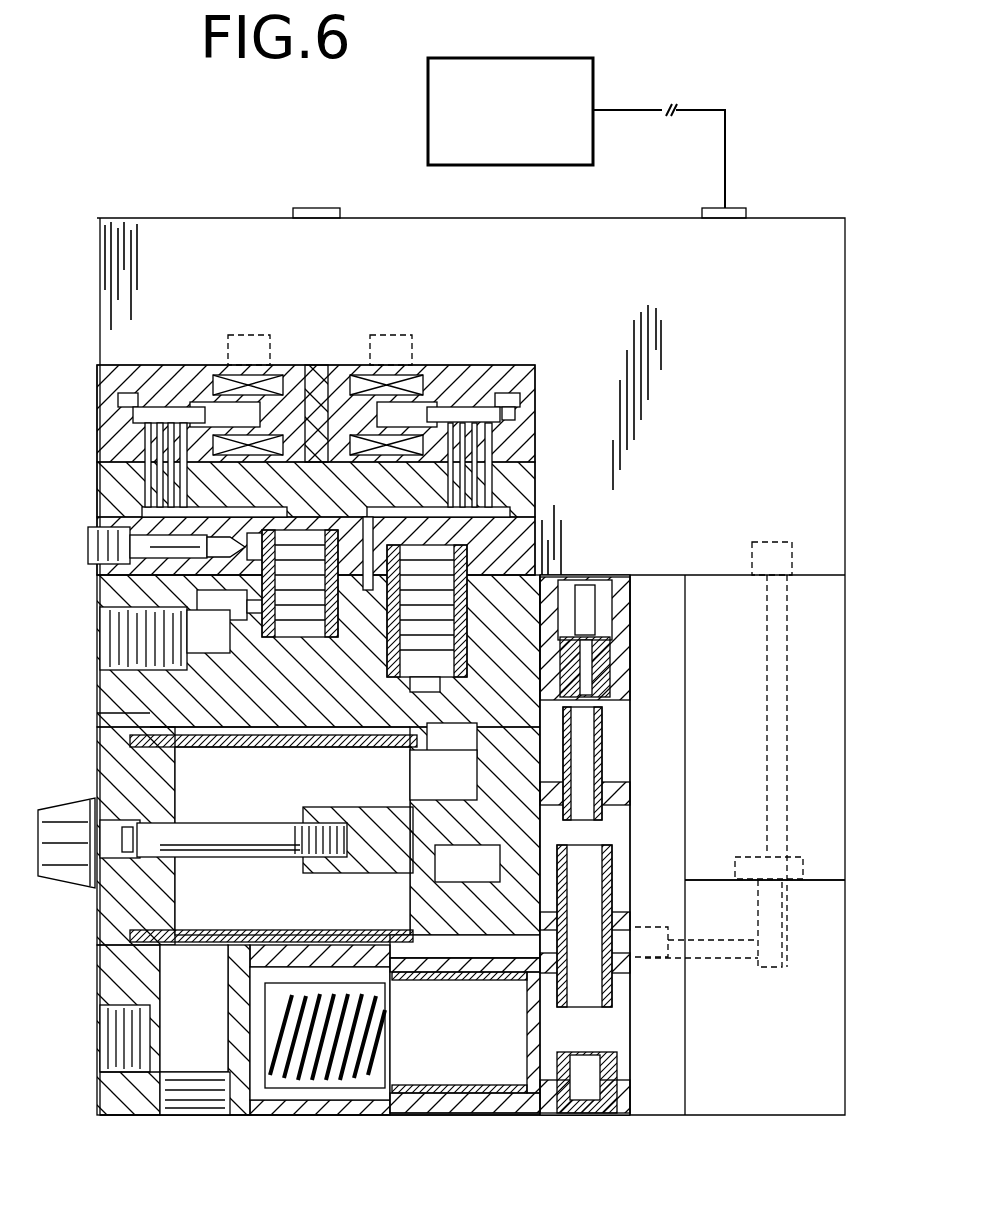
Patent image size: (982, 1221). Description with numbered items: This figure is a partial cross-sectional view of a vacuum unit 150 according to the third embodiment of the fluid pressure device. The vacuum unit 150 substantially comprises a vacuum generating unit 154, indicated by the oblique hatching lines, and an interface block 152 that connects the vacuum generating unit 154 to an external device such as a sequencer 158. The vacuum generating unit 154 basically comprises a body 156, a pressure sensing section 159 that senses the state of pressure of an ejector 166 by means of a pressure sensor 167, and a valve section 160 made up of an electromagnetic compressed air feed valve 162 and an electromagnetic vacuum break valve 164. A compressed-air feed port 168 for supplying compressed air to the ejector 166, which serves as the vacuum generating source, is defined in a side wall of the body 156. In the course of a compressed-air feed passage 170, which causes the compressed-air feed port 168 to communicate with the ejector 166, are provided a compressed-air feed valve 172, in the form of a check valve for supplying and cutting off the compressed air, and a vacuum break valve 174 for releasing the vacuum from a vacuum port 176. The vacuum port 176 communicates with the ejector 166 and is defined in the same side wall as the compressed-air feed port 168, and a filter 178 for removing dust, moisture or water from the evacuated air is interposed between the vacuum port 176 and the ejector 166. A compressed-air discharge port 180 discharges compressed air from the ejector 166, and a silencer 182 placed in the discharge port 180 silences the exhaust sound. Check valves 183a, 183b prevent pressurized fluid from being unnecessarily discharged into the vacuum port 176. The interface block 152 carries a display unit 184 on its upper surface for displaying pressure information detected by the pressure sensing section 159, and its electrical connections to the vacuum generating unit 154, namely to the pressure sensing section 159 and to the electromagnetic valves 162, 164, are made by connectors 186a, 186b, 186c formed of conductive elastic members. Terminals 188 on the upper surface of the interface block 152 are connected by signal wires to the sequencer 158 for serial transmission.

The vacuum unit 150 is at (84, 757).
The interface block 152 is at (777, 220).
The vacuum generating unit 154 is at (463, 1124).
The body 156 is at (622, 997).
The sequencer 158 is at (445, 118).
The pressure sensing section 159 is at (830, 888).
The valve section 160 is at (506, 355).
The electromagnetic compressed air feed valve 162 is at (448, 400).
The electromagnetic vacuum break valve 164 is at (210, 370).
The ejector 166 is at (557, 1033).
The pressure sensor 167 is at (748, 855).
The compressed-air feed port 168 is at (100, 640).
The compressed-air feed passage 170 is at (205, 600).
The compressed-air feed valve 172 is at (447, 598).
The vacuum break valve 174 is at (330, 505).
The vacuum port 176 is at (125, 1050).
The filter 178 is at (210, 925).
The compressed-air discharge port 180 is at (296, 1100).
The silencer 182 is at (415, 1115).
The check valve 183a is at (505, 720).
The check valve 183b is at (505, 848).
The display unit 184 is at (313, 208).
The connector 186a is at (262, 337).
The connector 186b is at (393, 338).
The connector 186c is at (770, 542).
The terminal 188 is at (702, 208).